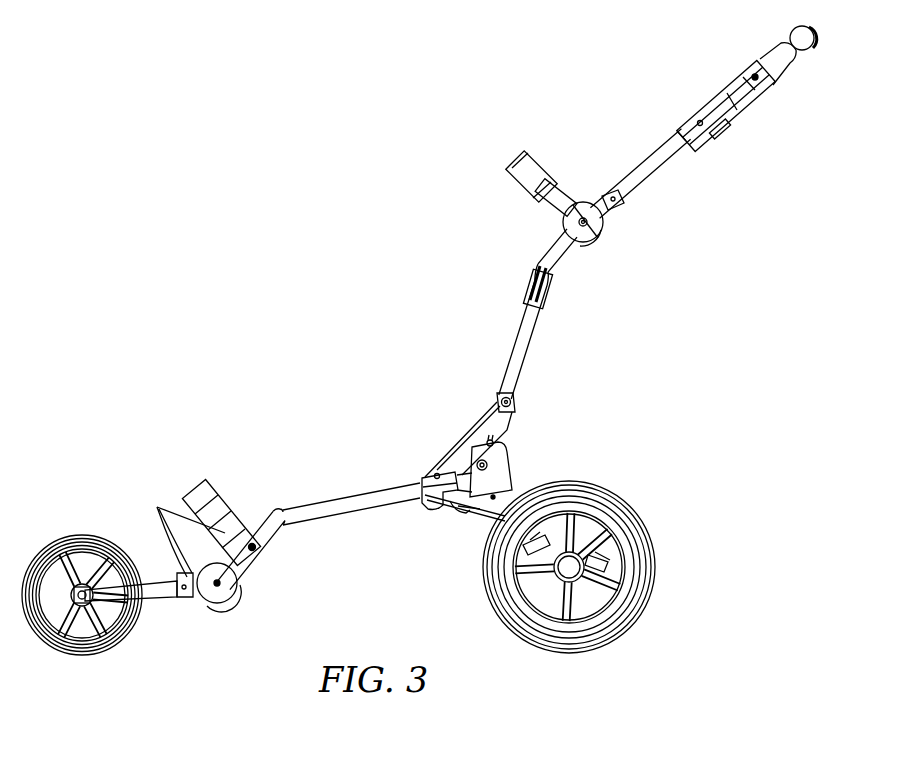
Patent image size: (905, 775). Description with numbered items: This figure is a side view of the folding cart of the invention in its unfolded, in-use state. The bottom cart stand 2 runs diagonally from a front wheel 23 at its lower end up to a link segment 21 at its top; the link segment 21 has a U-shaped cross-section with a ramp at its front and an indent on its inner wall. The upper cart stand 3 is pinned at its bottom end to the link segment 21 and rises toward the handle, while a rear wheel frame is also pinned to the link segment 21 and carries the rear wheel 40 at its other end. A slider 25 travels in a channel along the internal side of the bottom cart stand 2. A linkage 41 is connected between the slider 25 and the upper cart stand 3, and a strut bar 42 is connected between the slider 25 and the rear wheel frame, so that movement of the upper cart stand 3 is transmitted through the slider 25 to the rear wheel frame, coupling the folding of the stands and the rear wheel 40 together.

The bottom cart stand 2 is at (322, 513).
The upper cart stand 3 is at (535, 322).
The link segment 21 is at (500, 478).
The front wheel 23 is at (93, 650).
The slider 25 is at (433, 482).
The rear wheel 40 is at (645, 567).
The linkage 41 is at (470, 435).
The strut bar 42 is at (446, 503).